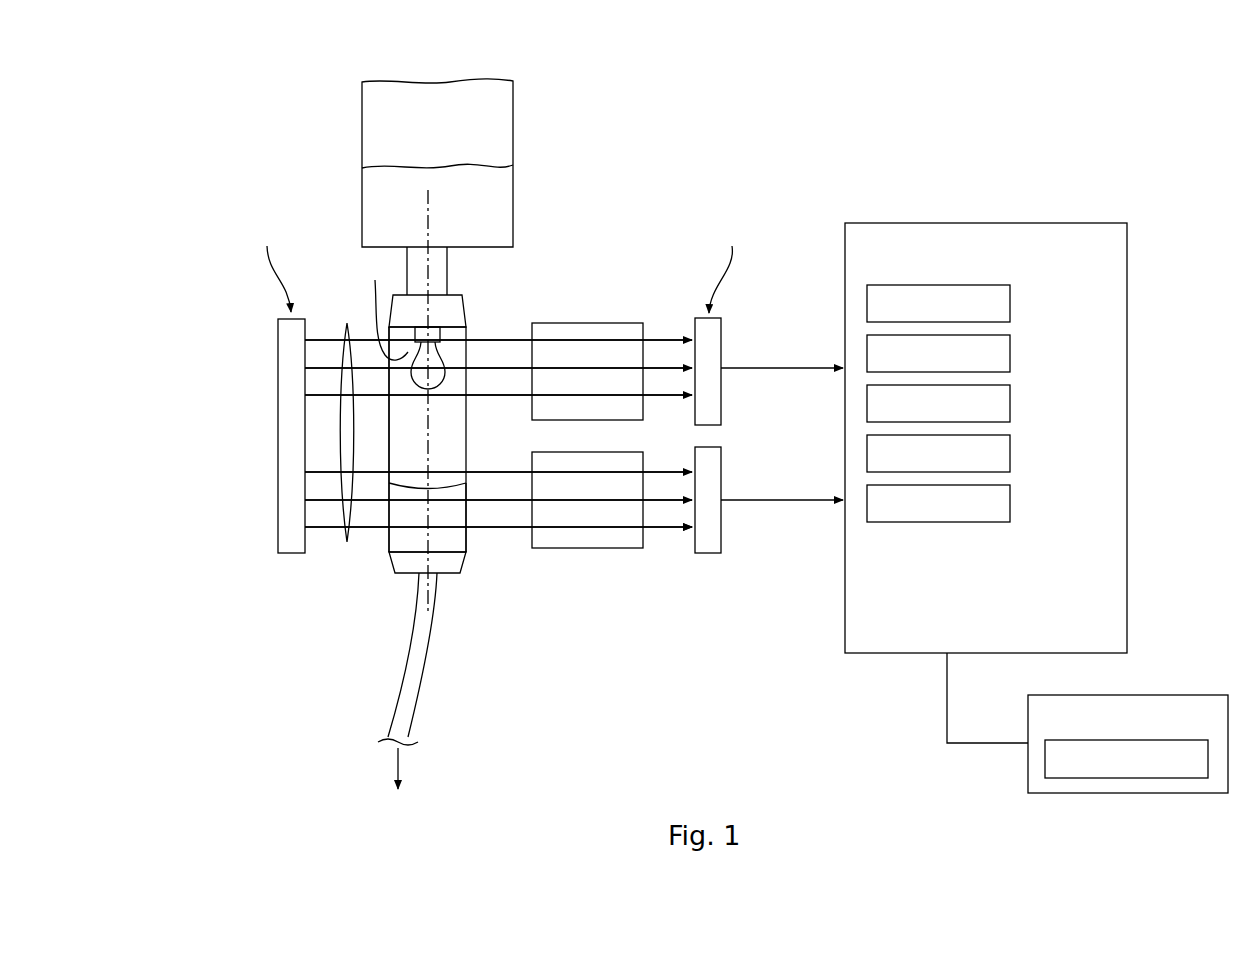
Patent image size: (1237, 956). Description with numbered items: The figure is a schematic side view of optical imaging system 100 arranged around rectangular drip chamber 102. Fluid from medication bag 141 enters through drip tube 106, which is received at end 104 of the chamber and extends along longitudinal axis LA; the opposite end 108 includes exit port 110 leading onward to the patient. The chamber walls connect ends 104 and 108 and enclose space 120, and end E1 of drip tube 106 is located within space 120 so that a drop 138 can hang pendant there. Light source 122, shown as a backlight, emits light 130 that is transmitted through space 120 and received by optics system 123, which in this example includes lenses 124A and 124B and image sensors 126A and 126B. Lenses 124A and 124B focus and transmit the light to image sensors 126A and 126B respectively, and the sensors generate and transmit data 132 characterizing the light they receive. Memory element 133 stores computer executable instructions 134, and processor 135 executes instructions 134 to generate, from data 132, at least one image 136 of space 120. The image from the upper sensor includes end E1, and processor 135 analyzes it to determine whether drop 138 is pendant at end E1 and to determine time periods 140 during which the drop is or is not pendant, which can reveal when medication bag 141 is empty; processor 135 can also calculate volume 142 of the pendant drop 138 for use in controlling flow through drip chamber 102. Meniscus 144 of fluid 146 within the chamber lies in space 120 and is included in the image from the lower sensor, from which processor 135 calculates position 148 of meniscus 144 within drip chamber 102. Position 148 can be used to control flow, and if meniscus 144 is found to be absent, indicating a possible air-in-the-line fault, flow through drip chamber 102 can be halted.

The optical imaging system 100 is at (688, 80).
The drip chamber 102 is at (377, 452).
The end 104 is at (468, 328).
The drip tube 106 is at (440, 318).
The end 108 is at (388, 560).
The exit port 110 is at (417, 575).
The space 120 is at (413, 415).
The light source 122 is at (278, 350).
The optics system 123 is at (750, 329).
The lens 124A is at (608, 323).
The lens 124B is at (612, 452).
The image sensor 126A is at (721, 348).
The image sensor 126B is at (721, 477).
The light 130 is at (346, 330).
The data 132 is at (1010, 305).
The memory element 133 is at (1128, 739).
The computer executable instructions 134 is at (1128, 778).
The processor 135 is at (986, 409).
The image 136 is at (1010, 355).
The drop 138 is at (420, 377).
The time periods 140 is at (1010, 405).
The medication bag 141 is at (513, 125).
The volume 142 is at (1010, 455).
The meniscus 144 is at (445, 483).
The fluid 146 is at (407, 512).
The position 148 is at (1010, 505).
The end E1 is at (385, 309).
The longitudinal axis LA is at (428, 217).